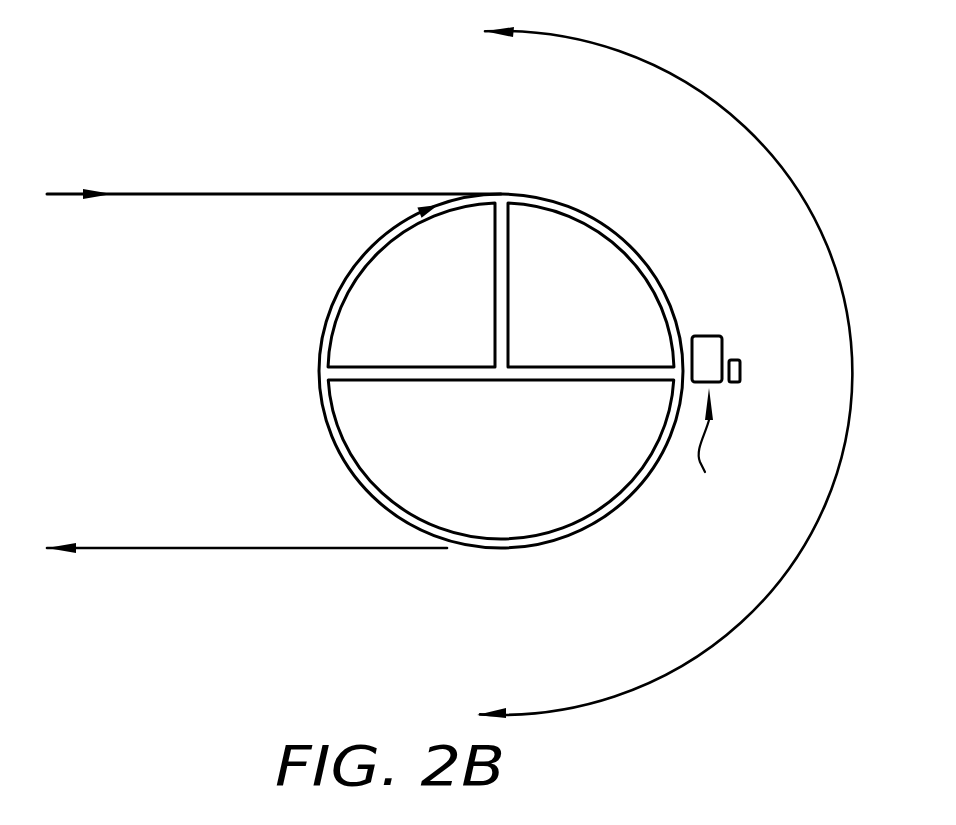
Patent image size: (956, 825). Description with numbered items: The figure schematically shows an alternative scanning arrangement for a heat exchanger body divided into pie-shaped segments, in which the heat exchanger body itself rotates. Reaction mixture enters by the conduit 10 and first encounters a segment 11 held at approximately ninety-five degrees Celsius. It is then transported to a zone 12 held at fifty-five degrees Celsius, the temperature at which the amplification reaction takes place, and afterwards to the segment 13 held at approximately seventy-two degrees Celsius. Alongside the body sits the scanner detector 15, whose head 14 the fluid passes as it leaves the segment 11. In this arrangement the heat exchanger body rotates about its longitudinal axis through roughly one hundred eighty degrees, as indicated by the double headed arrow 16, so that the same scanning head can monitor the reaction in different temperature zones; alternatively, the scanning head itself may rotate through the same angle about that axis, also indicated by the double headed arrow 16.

The conduit 10 is at (212, 196).
The segment 11 is at (582, 258).
The zone 12 is at (590, 488).
The segment 13 is at (368, 312).
The head 14 is at (707, 336).
The scanner detector 15 is at (719, 443).
The double headed arrow 16 is at (613, 45).